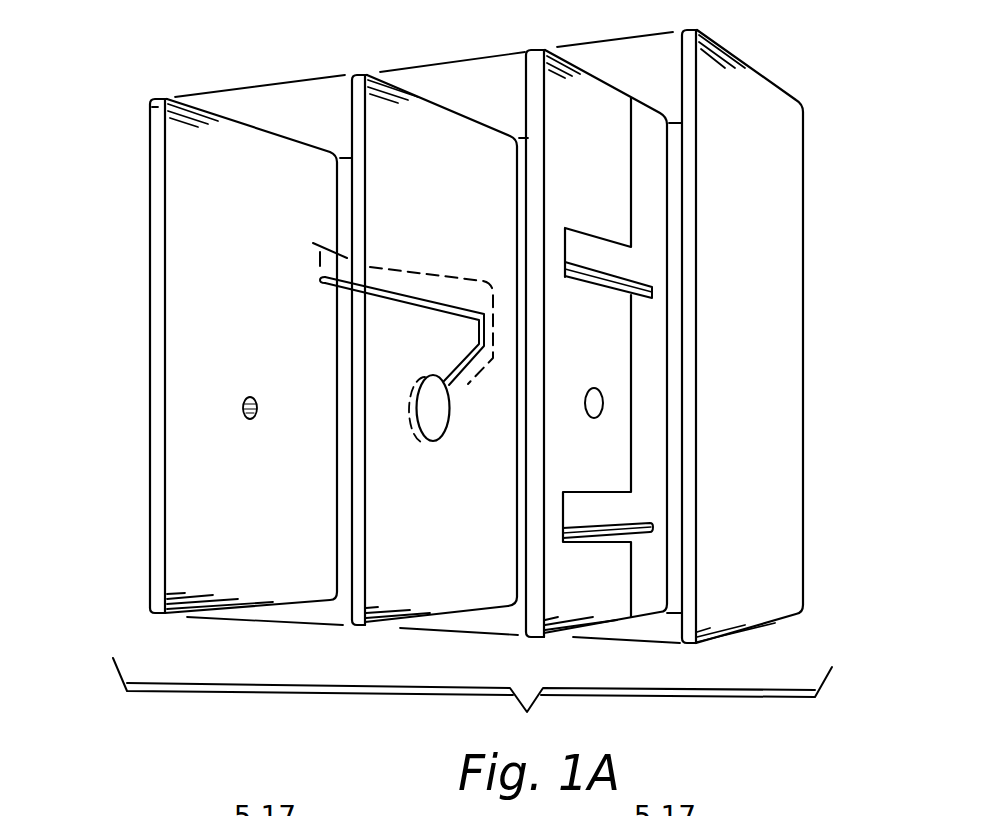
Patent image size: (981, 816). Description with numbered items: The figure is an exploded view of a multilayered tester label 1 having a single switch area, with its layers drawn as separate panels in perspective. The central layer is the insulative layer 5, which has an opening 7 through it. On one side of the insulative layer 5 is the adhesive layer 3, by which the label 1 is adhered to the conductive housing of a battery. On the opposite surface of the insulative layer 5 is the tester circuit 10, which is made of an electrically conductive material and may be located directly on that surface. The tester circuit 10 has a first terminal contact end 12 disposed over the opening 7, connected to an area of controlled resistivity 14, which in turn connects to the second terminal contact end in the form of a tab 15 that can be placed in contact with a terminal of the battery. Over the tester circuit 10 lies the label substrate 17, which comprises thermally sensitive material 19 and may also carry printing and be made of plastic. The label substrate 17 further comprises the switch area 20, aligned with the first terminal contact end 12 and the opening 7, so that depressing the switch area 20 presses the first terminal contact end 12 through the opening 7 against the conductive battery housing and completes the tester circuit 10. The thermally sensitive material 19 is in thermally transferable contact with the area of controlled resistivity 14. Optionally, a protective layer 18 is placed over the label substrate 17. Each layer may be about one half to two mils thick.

The tester label 1 is at (116, 204).
The adhesive layer 3 is at (147, 383).
The insulative layer 5 is at (190, 115).
The opening 7 is at (248, 421).
The tester circuit 10 is at (407, 272).
The first terminal contact end 12 is at (437, 425).
The area of controlled resistivity 14 is at (417, 300).
The tab 15 is at (322, 250).
The label substrate 17 is at (613, 83).
The protective layer 18 is at (722, 70).
The thermally sensitive material 19 is at (636, 282).
The switch area 20 is at (599, 390).